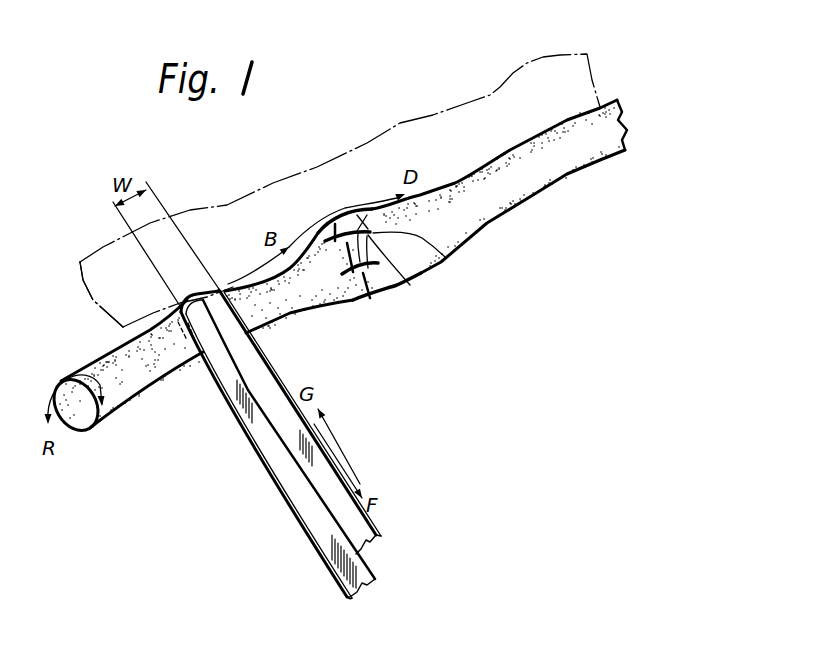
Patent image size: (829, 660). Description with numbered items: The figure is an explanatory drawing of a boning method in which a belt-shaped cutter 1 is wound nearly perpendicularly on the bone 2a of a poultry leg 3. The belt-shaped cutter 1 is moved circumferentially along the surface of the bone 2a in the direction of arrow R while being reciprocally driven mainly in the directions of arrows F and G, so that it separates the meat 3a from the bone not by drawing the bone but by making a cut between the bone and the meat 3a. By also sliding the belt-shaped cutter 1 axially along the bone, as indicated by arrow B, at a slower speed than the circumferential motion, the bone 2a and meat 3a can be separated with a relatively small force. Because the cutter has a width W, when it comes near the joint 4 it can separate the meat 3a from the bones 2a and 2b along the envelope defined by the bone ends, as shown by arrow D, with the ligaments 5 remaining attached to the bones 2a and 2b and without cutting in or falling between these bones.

The belt-shaped cutter 1 is at (244, 427).
The bone 2a is at (110, 354).
The bone 2b is at (541, 188).
The poultry leg 3 is at (519, 60).
The meat 3a is at (355, 168).
The joint 4 is at (400, 297).
The ligaments 5 is at (446, 258).